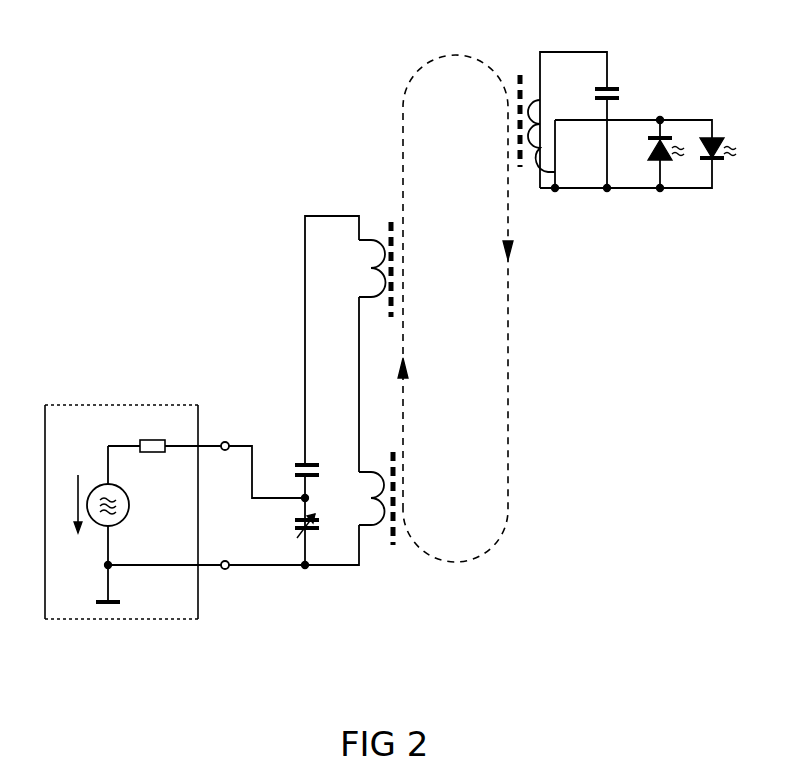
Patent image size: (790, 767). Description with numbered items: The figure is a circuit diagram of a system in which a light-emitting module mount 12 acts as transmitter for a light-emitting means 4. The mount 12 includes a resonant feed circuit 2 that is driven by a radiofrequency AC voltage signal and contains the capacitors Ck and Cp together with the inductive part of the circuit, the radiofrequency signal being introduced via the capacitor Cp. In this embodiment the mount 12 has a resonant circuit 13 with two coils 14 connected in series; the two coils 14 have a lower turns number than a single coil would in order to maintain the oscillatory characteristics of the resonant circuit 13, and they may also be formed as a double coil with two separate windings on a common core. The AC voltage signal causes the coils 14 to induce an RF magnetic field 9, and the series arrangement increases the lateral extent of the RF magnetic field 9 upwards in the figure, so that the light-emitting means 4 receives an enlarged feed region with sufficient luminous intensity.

The resonant feed circuit 2 is at (198, 405).
The light-emitting means 4 is at (656, 97).
The RF magnetic field 9 is at (412, 76).
The light-emitting module mount 12 is at (398, 648).
The resonant circuit 13 is at (305, 216).
The coils 14 is at (358, 260).